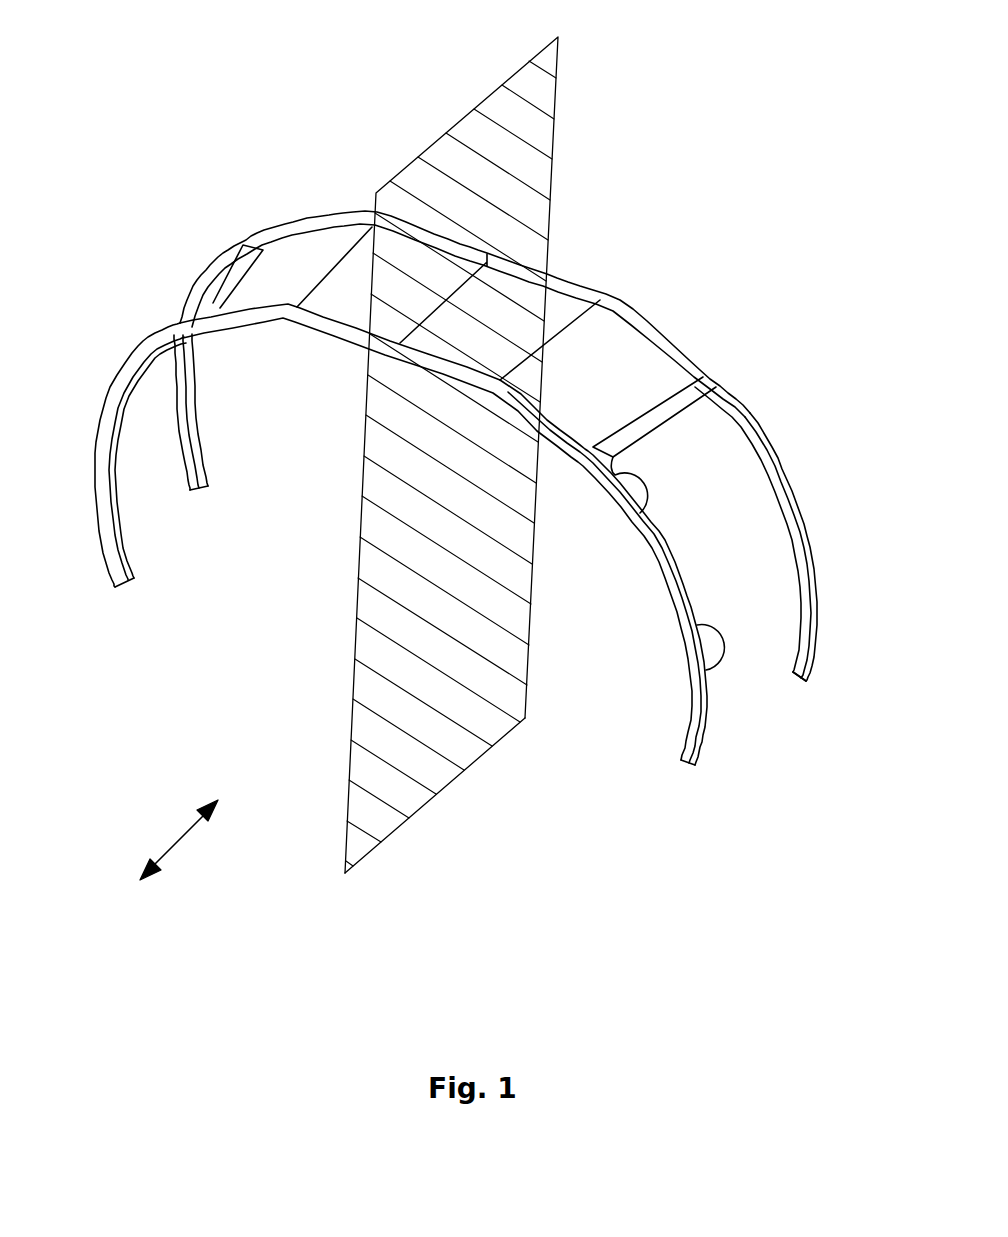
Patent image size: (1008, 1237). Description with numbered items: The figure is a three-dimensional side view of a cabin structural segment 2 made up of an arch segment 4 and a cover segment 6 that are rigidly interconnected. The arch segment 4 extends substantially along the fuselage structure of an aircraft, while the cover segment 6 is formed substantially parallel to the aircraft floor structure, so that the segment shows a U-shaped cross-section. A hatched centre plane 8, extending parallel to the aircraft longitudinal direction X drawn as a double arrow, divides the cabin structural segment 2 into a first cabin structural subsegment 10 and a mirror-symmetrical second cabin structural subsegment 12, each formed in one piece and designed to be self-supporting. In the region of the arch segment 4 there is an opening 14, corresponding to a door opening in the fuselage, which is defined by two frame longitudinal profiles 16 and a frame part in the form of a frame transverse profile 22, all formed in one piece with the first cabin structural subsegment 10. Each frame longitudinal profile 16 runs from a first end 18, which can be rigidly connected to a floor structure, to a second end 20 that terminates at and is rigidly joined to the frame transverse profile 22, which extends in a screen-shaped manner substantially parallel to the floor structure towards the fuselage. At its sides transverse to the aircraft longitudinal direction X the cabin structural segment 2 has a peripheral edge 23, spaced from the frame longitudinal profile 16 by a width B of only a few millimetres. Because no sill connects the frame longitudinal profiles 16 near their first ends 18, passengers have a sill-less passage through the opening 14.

The cabin structural segment 2 is at (586, 160).
The arch segment 4 is at (177, 333).
The cover segment 6 is at (527, 313).
The centre plane 8 is at (373, 815).
The first cabin structural subsegment 10 is at (476, 462).
The second cabin structural subsegment 12 is at (420, 377).
The opening 14 is at (176, 410).
The frame longitudinal profile 16 is at (803, 545).
The first end 18 is at (800, 686).
The second end 20 is at (640, 510).
The frame transverse profile 22 is at (718, 392).
The peripheral edge 23 is at (320, 222).
The width B is at (810, 673).
The aircraft longitudinal direction X is at (178, 837).